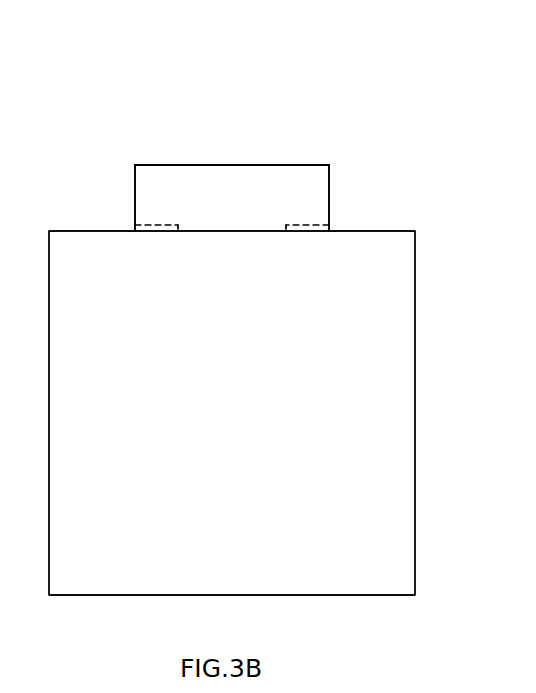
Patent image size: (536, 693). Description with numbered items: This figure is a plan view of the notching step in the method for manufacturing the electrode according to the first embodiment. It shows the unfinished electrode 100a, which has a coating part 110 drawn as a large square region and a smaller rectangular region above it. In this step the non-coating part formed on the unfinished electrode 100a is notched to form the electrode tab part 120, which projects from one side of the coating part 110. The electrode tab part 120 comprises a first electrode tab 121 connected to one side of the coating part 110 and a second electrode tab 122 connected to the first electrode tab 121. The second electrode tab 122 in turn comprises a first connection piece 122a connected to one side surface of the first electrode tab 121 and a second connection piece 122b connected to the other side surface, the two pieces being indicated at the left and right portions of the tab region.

The unfinished electrode 100a is at (409, 154).
The coating part 110 is at (405, 400).
The electrode tab part 120 is at (232, 46).
The first electrode tab 121 is at (227, 215).
The second electrode tab 122 is at (318, 103).
The first connection piece 122a is at (158, 177).
The second connection piece 122b is at (307, 177).